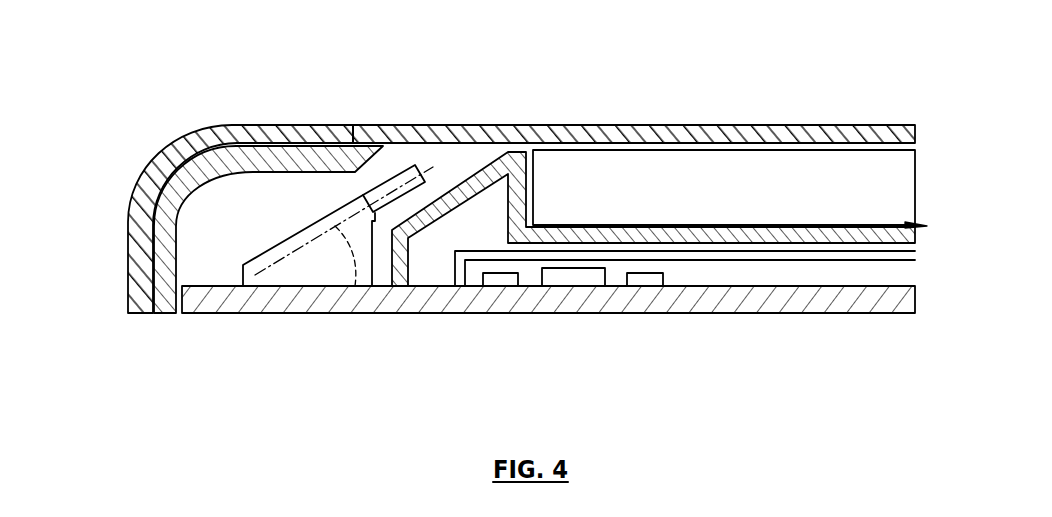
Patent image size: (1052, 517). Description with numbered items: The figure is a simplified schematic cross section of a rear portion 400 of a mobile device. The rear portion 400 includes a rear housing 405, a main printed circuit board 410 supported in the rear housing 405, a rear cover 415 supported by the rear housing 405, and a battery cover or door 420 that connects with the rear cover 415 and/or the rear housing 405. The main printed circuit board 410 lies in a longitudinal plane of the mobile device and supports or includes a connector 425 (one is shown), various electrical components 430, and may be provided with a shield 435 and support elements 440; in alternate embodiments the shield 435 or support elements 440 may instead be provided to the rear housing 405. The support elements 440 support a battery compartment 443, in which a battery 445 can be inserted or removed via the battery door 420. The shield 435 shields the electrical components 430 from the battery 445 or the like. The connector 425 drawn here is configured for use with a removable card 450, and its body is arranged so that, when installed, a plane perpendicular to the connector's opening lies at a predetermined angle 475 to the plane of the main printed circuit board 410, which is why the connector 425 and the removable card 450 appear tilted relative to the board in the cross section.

The rear portion 400 is at (228, 76).
The rear housing 405 is at (163, 300).
The main printed circuit board 410 is at (335, 303).
The rear cover 415 is at (128, 294).
The battery cover or door 420 is at (538, 125).
The connector 425 is at (283, 273).
The electrical components 430 is at (632, 278).
The shield 435 is at (458, 280).
The support elements 440 is at (463, 184).
The battery compartment 443 is at (692, 103).
The battery 445 is at (722, 200).
The removable card 450 is at (403, 172).
The predetermined angle 475 is at (352, 256).